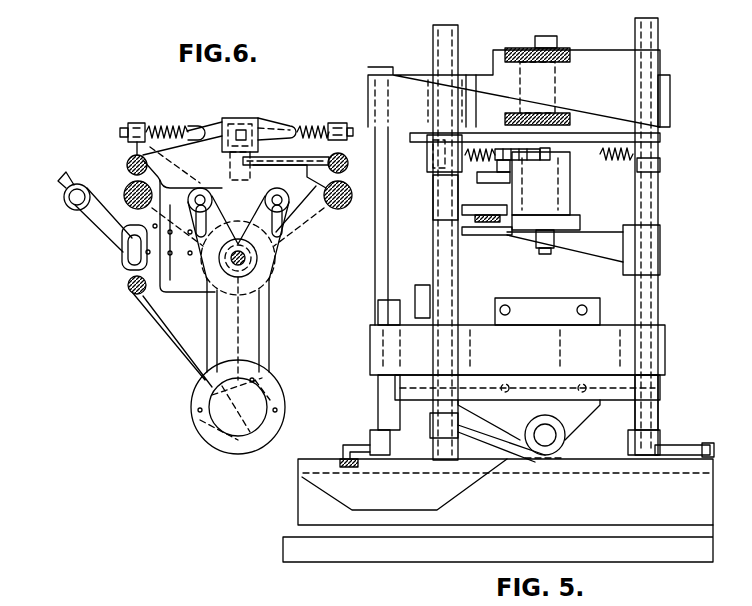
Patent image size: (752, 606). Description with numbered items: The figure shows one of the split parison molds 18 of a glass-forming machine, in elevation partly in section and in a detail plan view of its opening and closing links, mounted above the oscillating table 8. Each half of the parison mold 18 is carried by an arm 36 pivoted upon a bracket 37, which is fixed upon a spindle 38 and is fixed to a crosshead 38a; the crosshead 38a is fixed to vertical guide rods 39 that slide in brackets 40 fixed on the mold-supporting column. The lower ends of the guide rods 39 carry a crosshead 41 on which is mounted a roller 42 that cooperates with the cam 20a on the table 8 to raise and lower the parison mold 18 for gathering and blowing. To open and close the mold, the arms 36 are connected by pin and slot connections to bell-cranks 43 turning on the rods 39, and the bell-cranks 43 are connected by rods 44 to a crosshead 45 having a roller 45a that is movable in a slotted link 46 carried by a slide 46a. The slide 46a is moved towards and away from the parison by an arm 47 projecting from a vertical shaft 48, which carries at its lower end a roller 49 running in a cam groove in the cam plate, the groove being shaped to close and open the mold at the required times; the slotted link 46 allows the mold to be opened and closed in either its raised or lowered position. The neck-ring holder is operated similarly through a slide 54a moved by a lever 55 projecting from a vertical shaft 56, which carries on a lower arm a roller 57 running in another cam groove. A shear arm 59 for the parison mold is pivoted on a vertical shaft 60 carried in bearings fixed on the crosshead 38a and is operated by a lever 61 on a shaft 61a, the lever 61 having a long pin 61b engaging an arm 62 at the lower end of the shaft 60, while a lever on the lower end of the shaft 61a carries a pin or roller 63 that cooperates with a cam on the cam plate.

In FIG. 5, the table 8 is at (498, 543).
In FIG. 6, the parison mold 18 is at (228, 440).
In FIG. 5, the cam 20a is at (505, 492).
In FIG. 6, the arm 36 is at (262, 240).
In FIG. 6, the bracket 37 is at (202, 272).
In FIG. 5, the bracket 37 is at (570, 203).
In FIG. 6, the spindle 38 is at (258, 266).
In FIG. 5, the spindle 38 is at (545, 254).
In FIG. 6, the crosshead 38a is at (313, 223).
In FIG. 5, the crosshead 38a is at (620, 245).
In FIG. 6, the vertical guide rod 39 is at (125, 188).
In FIG. 5, the vertical guide rod 39 is at (446, 40).
In FIG. 5, the bracket 40 is at (408, 78).
In FIG. 5, the crosshead 41 is at (598, 398).
In FIG. 5, the roller 42 is at (510, 438).
In FIG. 6, the bell-crank 43 is at (122, 134).
In FIG. 5, the bell-crank 43 is at (660, 166).
In FIG. 6, the rod 44 is at (304, 124).
In FIG. 5, the rod 44 is at (636, 150).
In FIG. 6, the crosshead 45 is at (262, 124).
In FIG. 5, the roller 45a is at (590, 144).
In FIG. 6, the slotted link 46 is at (238, 118).
In FIG. 5, the slotted link 46 is at (540, 188).
In FIG. 6, the slide 46a is at (238, 180).
In FIG. 5, the slide 46a is at (548, 112).
In FIG. 6, the arm 47 is at (182, 150).
In FIG. 5, the arm 47 is at (470, 128).
In FIG. 6, the vertical shaft 48 is at (127, 163).
In FIG. 5, the vertical shaft 48 is at (430, 415).
In FIG. 5, the roller 49 is at (560, 448).
In FIG. 5, the slide 54a is at (515, 48).
In FIG. 6, the lever 55 is at (286, 152).
In FIG. 5, the lever 55 is at (552, 48).
In FIG. 6, the vertical shaft 56 is at (347, 158).
In FIG. 5, the vertical shaft 56 is at (650, 412).
In FIG. 5, the roller 57 is at (700, 448).
In FIG. 6, the shear arm 59 is at (166, 338).
In FIG. 5, the shear arm 59 is at (462, 210).
In FIG. 6, the vertical shaft 60 is at (129, 288).
In FIG. 5, the vertical shaft 60 is at (432, 193).
In FIG. 6, the lever 61 is at (110, 226).
In FIG. 5, the lever 61 is at (400, 300).
In FIG. 5, the shaft 61a is at (378, 405).
In FIG. 5, the long pin 61b is at (378, 324).
In FIG. 6, the arm 62 is at (124, 264).
In FIG. 5, the arm 62 is at (420, 296).
In FIG. 5, the pin or roller 63 is at (343, 456).